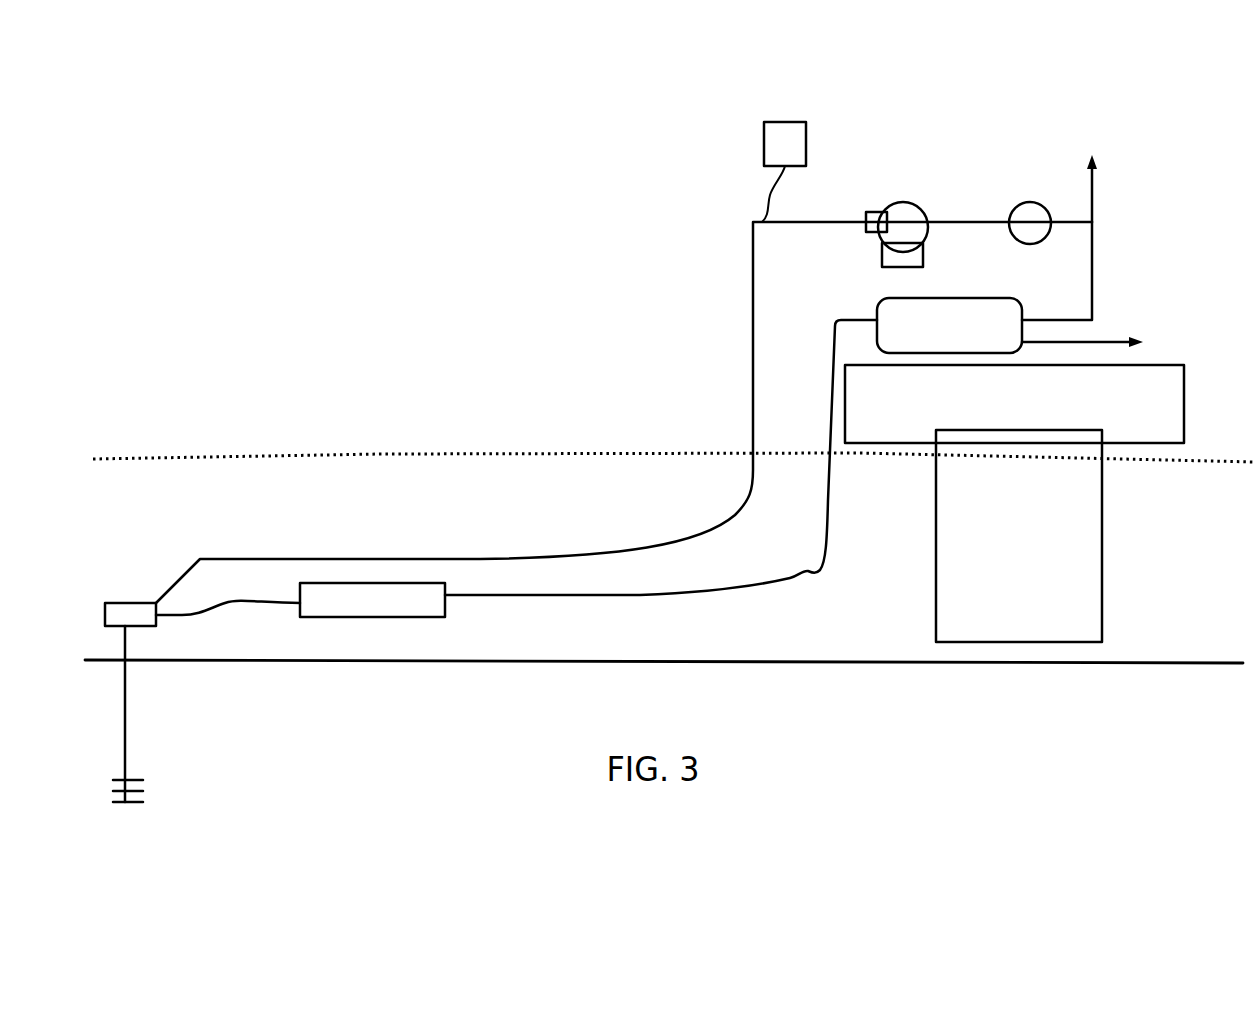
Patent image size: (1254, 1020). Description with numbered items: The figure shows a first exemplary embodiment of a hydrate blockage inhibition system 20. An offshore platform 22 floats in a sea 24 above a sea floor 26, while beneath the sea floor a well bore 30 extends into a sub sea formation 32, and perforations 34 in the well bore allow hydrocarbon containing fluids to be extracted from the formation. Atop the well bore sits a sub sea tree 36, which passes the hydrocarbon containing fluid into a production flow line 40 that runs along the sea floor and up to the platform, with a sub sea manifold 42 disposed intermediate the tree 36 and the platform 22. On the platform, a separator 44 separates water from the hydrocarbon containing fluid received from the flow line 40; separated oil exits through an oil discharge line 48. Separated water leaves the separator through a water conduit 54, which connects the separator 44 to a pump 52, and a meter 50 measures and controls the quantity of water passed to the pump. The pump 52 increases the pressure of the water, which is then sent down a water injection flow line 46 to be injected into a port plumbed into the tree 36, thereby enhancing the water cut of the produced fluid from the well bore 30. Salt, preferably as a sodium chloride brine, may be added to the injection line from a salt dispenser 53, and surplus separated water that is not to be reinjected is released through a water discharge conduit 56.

The hydrate blockage inhibition system 20 is at (380, 186).
The offshore platform 22 is at (1184, 387).
The sea 24 is at (380, 535).
The sea floor 26 is at (488, 660).
The well bore 30 is at (125, 703).
The sub sea formation 32 is at (305, 738).
The perforations 34 is at (130, 780).
The sub sea tree 36 is at (118, 603).
The production flow line 40 is at (743, 593).
The sub sea manifold 42 is at (383, 620).
The separator 44 is at (966, 341).
The water injection flow line 46 is at (752, 297).
The oil discharge line 48 is at (1103, 342).
The meter 50 is at (1037, 203).
The pump 52 is at (900, 202).
The salt dispenser 53 is at (786, 122).
The water conduit 54 is at (1092, 277).
The water discharge conduit 56 is at (1092, 190).